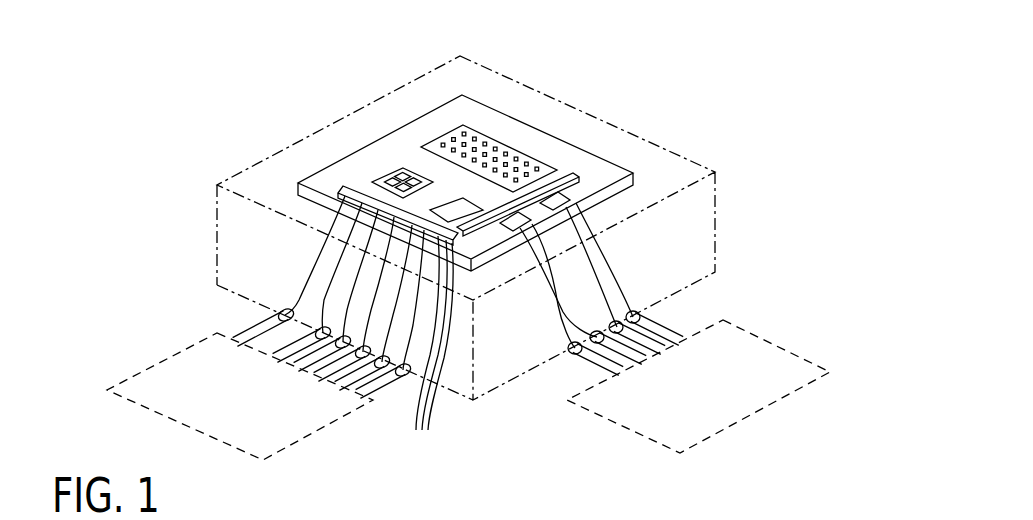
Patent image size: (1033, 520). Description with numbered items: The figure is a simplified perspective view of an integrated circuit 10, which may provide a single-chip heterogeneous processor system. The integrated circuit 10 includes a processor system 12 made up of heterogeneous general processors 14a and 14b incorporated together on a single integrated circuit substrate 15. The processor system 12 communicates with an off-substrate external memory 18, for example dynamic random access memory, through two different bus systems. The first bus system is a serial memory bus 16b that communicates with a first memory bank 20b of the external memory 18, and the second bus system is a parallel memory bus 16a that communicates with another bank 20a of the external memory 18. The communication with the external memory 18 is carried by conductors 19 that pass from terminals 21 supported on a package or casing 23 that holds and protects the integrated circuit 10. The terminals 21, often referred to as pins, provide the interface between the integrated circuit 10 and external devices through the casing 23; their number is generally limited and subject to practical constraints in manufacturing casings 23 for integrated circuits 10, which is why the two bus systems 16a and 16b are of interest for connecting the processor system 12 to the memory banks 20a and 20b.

The integrated circuit 10 is at (560, 48).
The processor system 12 is at (360, 135).
The heterogeneous general processor 14a is at (374, 180).
The heterogeneous general processor 14b is at (432, 140).
The integrated circuit substrate 15 is at (550, 133).
The parallel memory bus 16a is at (280, 260).
The serial memory bus 16b is at (634, 264).
The external memory 18 is at (300, 415).
The conductors 19 is at (556, 300).
The memory bank 20a is at (185, 372).
The first memory bank 20b is at (748, 360).
The terminals 21 is at (279, 314).
The casing 23 is at (217, 203).